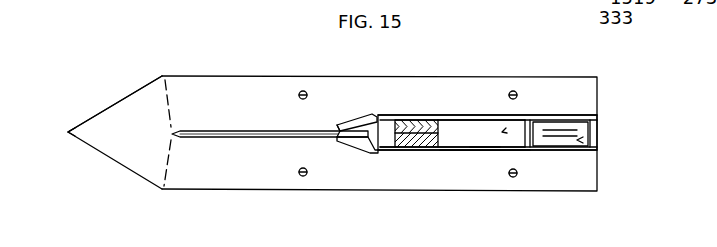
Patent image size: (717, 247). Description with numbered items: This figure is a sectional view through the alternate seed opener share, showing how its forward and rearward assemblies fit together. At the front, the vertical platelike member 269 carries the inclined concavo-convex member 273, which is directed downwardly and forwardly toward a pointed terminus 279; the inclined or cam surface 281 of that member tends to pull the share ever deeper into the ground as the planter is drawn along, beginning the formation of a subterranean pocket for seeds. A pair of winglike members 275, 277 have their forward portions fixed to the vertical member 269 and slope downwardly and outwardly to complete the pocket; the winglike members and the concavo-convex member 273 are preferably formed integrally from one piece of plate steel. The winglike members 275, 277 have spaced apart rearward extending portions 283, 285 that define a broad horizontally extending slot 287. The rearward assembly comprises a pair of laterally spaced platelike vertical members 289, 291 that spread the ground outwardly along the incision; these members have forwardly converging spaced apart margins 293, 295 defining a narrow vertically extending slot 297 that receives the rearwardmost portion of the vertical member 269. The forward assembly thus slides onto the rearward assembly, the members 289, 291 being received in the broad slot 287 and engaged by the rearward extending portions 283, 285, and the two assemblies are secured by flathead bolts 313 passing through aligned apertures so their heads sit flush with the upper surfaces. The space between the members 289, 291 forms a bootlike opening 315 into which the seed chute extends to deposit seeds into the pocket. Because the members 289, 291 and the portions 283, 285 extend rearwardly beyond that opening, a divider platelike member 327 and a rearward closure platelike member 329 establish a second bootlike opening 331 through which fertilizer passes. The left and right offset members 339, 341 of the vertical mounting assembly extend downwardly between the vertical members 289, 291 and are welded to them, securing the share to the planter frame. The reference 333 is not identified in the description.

The vertical platelike member 269 is at (228, 133).
The inclined concavo-convex member 273 is at (123, 143).
The winglike member 275 is at (253, 172).
The winglike member 277 is at (267, 103).
The pointed terminus 279 is at (68, 132).
The inclined or cam surface 281 is at (132, 110).
The rearward extending portion 283 is at (483, 177).
The rearward extending portion 285 is at (460, 97).
The broad horizontally extending slot 287 is at (380, 115).
The platelike vertical member 289 is at (483, 152).
The platelike vertical member 291 is at (470, 115).
The forwardly converging margin 293 is at (358, 150).
The forwardly converging margin 295 is at (348, 123).
The narrow vertically extending slot 297 is at (337, 124).
The flathead bolt 313 is at (302, 99).
The bootlike opening 315 is at (502, 132).
The divider platelike member 327 is at (535, 143).
The rearward closure platelike member 329 is at (595, 127).
The second bootlike opening 331 is at (578, 140).
The slot 333 is at (558, 142).
The left offset member 339 is at (407, 150).
The right offset member 341 is at (422, 118).